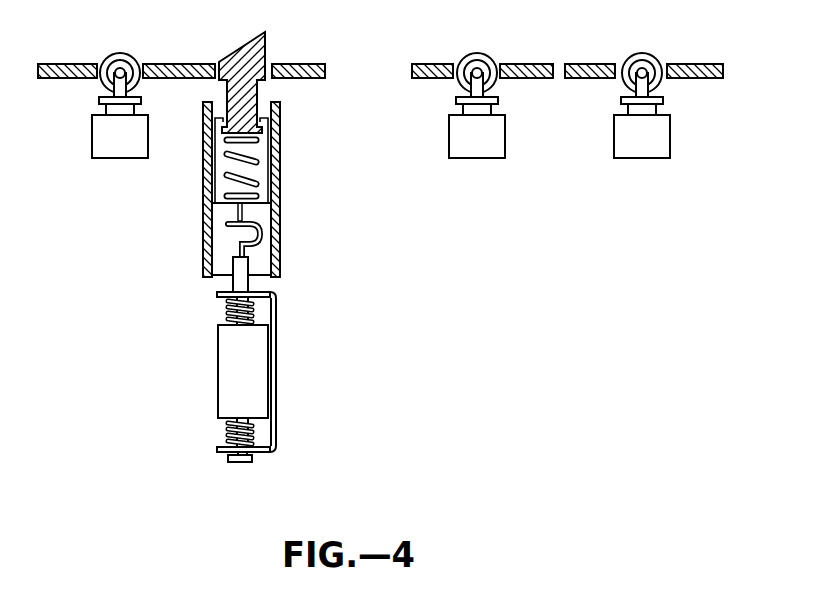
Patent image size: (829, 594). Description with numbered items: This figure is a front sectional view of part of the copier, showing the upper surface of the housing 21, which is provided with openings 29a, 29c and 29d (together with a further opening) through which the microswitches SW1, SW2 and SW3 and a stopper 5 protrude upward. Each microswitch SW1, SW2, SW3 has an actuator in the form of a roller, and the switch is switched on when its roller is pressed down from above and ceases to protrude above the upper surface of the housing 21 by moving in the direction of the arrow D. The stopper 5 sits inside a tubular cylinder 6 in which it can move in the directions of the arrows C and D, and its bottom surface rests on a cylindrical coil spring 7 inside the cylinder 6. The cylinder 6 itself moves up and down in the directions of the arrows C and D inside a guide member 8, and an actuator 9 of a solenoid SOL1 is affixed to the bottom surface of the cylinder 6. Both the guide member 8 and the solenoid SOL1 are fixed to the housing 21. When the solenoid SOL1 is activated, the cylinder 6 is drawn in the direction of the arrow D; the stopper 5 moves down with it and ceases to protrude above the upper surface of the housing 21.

The housing 21 is at (707, 63).
The opening 29a is at (139, 54).
The opening 29c is at (497, 53).
The opening 29d is at (215, 54).
The stopper 5 is at (266, 38).
The tubular cylinder 6 is at (262, 206).
The cylindrical coil spring 7 is at (258, 152).
The guide member 8 is at (276, 270).
The actuator 9 is at (237, 250).
The microswitch SW1 is at (623, 158).
The microswitch SW2 is at (100, 158).
The microswitch SW3 is at (458, 158).
The solenoid SOL1 is at (276, 372).
The arrow C is at (337, 121).
The arrow D is at (360, 160).